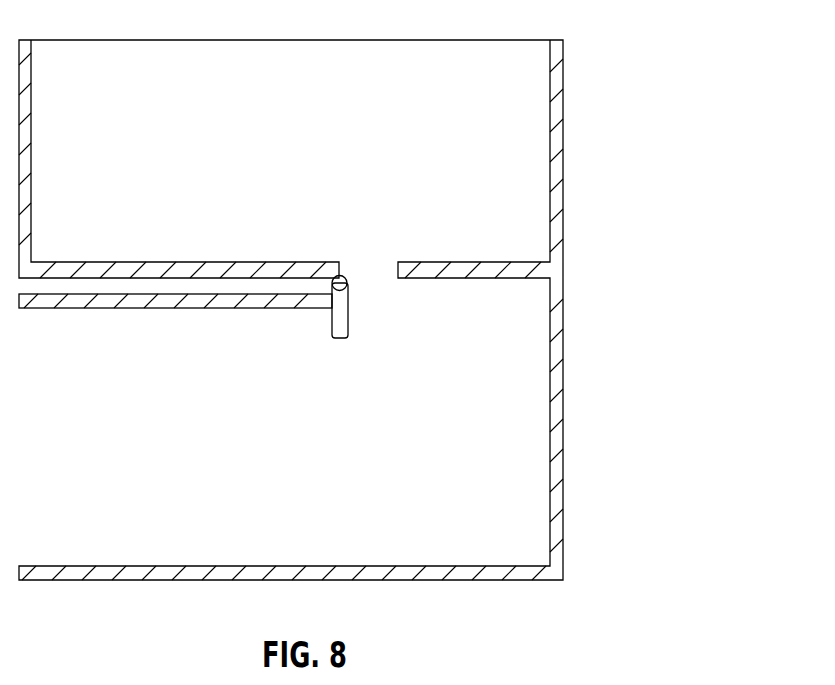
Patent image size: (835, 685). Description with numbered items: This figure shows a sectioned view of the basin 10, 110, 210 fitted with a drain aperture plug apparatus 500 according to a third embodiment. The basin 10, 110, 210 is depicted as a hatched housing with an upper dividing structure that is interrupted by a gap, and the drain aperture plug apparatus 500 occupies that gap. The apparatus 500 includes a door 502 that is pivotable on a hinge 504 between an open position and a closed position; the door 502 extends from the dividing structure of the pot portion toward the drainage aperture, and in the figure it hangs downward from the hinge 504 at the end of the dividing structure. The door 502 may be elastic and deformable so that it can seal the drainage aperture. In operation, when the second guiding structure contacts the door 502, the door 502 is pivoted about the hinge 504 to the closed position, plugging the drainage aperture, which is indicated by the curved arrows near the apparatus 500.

The housing 10 is at (404, 295).
The housing 110 is at (404, 295).
The housing 210 is at (597, 49).
The drain aperture plug apparatus 500 is at (320, 281).
The door 502 is at (390, 290).
The hinge 504 is at (333, 279).